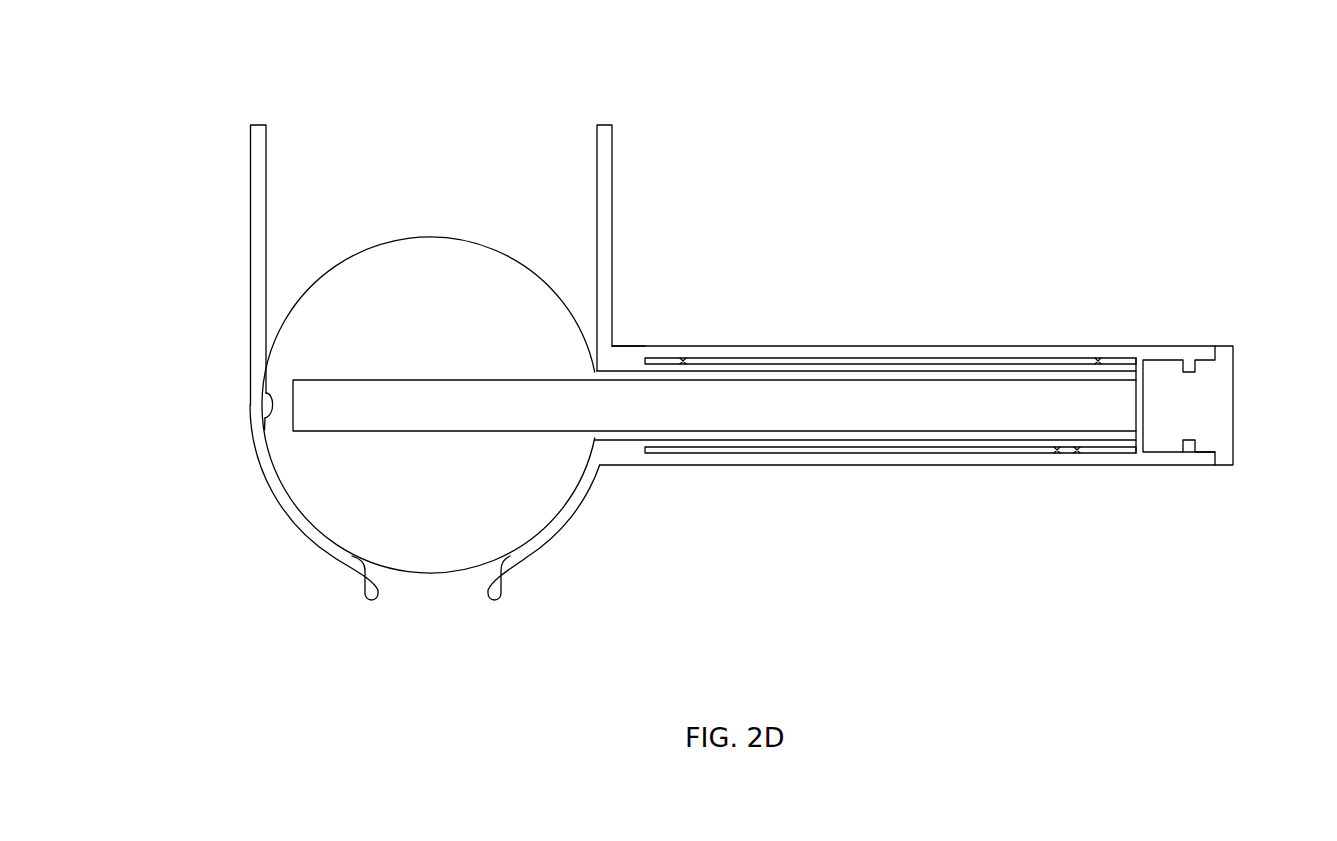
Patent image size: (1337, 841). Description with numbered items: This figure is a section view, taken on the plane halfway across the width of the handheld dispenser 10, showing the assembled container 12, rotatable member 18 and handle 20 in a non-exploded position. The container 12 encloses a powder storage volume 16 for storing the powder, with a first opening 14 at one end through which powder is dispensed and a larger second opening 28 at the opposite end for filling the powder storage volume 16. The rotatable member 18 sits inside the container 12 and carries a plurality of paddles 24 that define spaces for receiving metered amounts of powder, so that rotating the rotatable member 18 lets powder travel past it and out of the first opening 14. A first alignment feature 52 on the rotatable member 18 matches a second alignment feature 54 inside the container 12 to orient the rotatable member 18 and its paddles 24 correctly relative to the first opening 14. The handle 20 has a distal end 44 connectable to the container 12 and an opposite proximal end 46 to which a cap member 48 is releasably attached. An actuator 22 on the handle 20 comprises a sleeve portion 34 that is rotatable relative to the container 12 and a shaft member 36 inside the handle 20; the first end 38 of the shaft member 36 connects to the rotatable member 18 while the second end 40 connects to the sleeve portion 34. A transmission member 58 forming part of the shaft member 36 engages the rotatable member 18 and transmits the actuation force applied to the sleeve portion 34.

The handheld dispenser 10 is at (975, 210).
The container 12 is at (252, 235).
The first opening 14 is at (445, 597).
The powder storage volume 16 is at (405, 188).
The rotatable member 18 is at (367, 450).
The handle 20 is at (914, 457).
The actuator 22 is at (914, 457).
The paddles 24 is at (273, 347).
The second opening 28 is at (460, 128).
The sleeve portion 34 is at (988, 462).
The shaft member 36 is at (700, 472).
The first end 38 is at (292, 430).
The second end 40 is at (1134, 380).
The distal end 44 is at (640, 346).
The proximal end 46 is at (1216, 467).
The cap member 48 is at (1236, 398).
The first alignment feature 52 is at (266, 415).
The second alignment feature 54 is at (263, 402).
The transmission member 58 is at (802, 440).